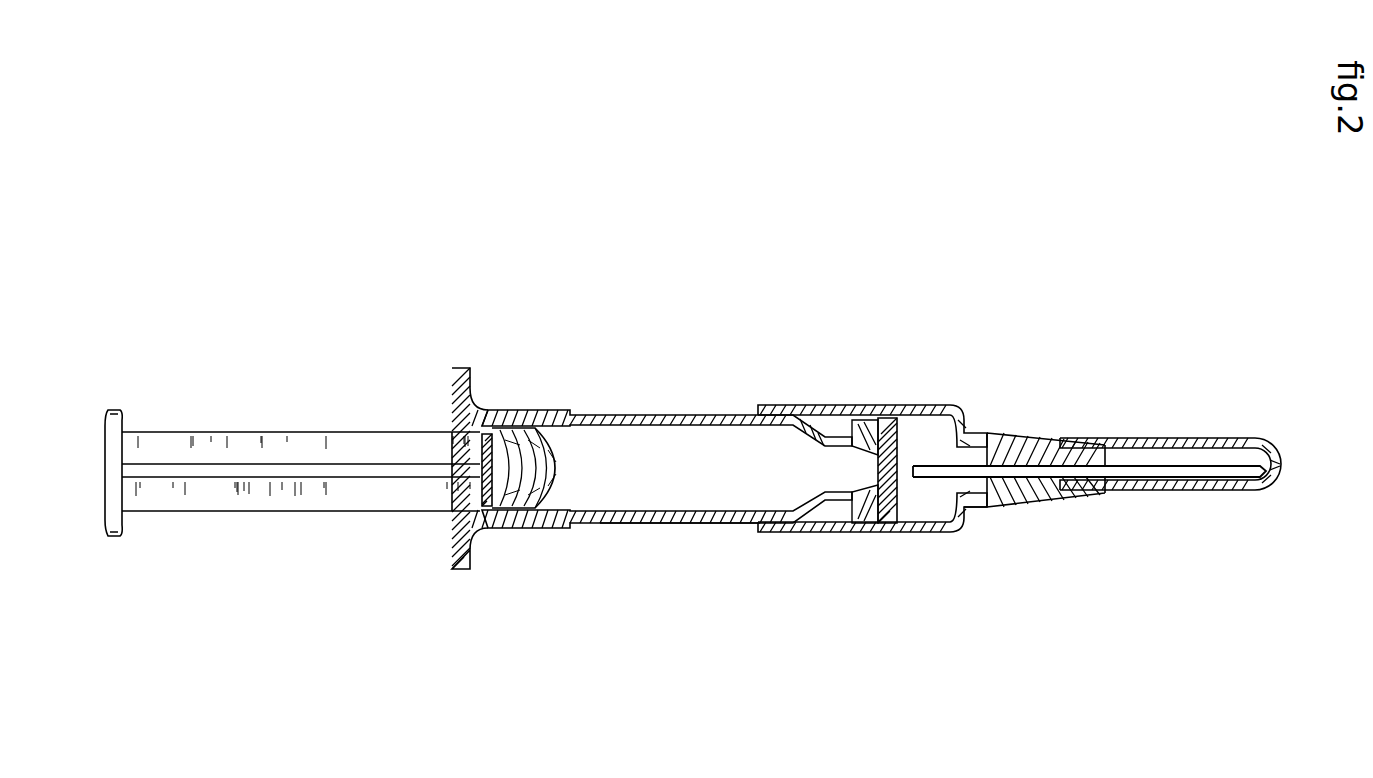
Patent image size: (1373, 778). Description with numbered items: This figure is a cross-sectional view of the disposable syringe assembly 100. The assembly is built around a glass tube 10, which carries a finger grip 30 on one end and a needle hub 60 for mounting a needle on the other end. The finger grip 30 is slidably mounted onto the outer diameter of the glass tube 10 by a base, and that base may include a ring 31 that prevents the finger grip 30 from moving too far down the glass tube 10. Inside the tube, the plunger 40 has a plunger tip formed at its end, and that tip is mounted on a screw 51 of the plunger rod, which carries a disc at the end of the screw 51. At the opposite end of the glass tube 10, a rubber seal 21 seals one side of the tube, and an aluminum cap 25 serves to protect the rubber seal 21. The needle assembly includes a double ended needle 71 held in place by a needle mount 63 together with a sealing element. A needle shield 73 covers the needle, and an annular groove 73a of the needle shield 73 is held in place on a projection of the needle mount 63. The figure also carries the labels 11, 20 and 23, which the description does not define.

The glass tube 10 is at (680, 410).
The barrel wall 11 is at (673, 523).
The plunger rod 20 is at (323, 430).
The rubber seal 21 is at (854, 519).
The thumb plate 23 is at (122, 420).
The aluminum cap 25 is at (919, 518).
The finger grip 30 is at (470, 398).
The ring 31 is at (440, 522).
The plunger 40 is at (550, 528).
The screw 51 is at (512, 530).
The needle hub 60 is at (855, 405).
The needle mount 63 is at (1047, 485).
The double ended needle 71 is at (1145, 463).
The needle shield 73 is at (1215, 442).
The annular groove 73a is at (988, 433).
The disposable syringe assembly 100 is at (1150, 588).